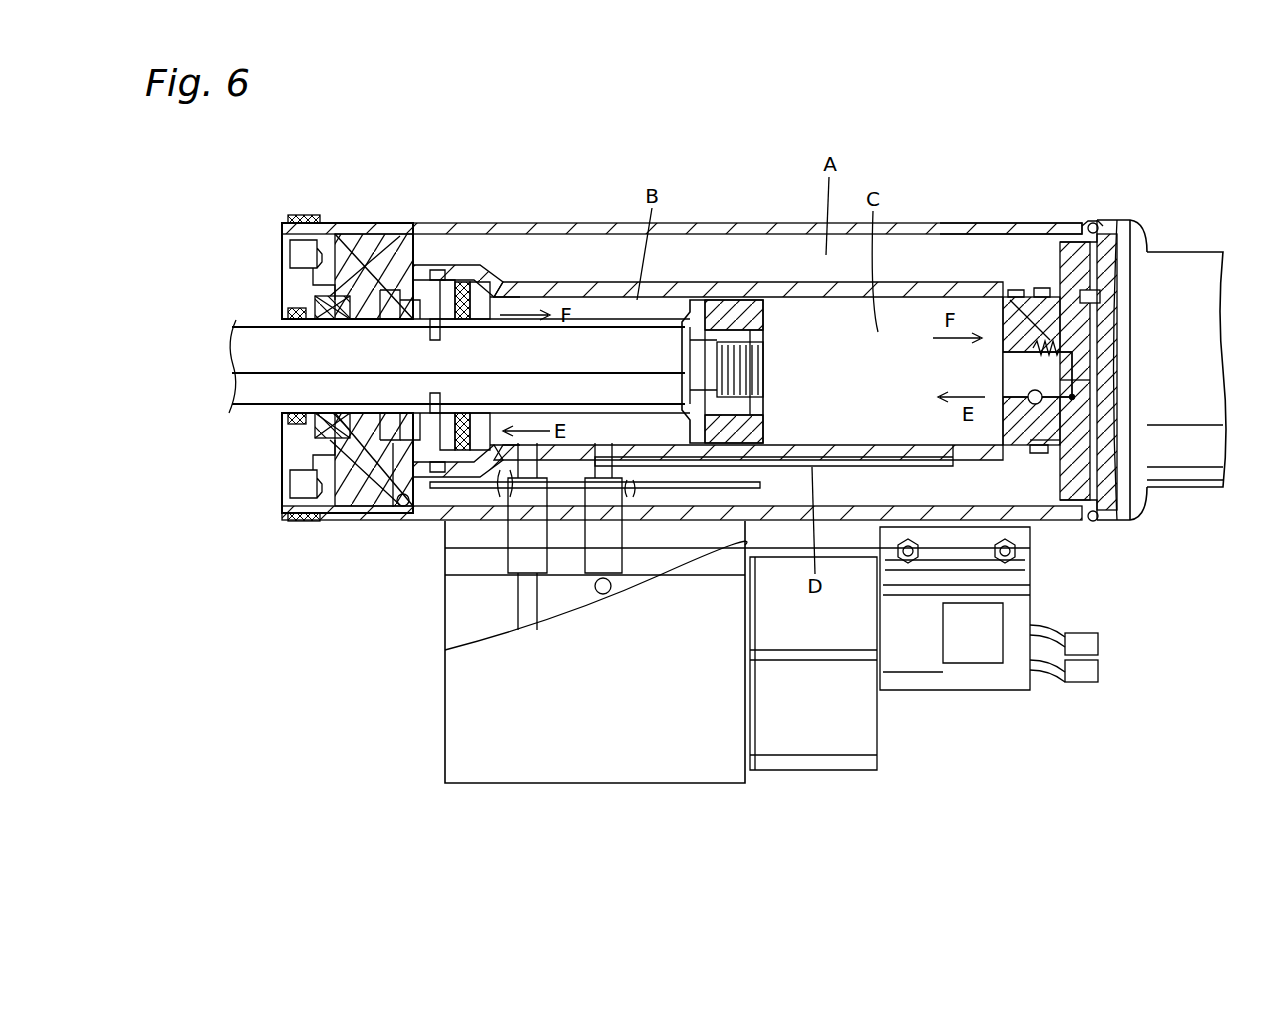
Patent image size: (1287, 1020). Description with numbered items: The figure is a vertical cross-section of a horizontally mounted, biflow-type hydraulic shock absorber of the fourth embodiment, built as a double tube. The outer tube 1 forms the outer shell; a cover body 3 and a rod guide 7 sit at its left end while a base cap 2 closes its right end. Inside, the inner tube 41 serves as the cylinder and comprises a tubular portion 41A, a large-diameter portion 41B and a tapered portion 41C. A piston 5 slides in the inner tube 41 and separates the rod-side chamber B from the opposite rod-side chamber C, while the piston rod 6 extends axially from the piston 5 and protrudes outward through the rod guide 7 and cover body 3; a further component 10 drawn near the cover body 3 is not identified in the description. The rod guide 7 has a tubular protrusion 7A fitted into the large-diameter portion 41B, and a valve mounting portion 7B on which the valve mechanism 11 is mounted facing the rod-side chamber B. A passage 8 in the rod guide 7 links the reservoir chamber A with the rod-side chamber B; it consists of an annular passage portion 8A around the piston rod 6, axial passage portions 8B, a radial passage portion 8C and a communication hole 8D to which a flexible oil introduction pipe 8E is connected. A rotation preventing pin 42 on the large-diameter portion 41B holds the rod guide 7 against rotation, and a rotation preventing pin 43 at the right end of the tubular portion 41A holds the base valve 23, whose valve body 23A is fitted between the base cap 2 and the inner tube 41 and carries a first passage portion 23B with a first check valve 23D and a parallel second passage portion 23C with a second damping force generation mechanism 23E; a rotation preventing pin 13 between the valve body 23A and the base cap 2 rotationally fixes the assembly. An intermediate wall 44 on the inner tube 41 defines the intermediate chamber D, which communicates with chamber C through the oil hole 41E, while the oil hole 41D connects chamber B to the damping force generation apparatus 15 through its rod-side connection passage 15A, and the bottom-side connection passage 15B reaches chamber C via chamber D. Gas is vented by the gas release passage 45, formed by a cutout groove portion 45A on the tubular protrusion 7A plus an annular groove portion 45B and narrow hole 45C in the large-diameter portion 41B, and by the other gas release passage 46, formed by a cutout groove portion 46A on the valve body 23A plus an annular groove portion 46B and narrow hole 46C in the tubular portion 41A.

The outer tube 1 is at (945, 228).
The base cap 2 is at (1147, 280).
The cover body 3 is at (290, 262).
The piston 5 is at (732, 305).
The piston rod 6 is at (253, 383).
The rod guide 7 is at (353, 273).
The tubular protrusion 7A is at (470, 520).
The valve mounting portion 7B is at (450, 288).
The passage 8 is at (325, 428).
The annular passage portion 8A is at (373, 297).
The axial passage portions 8B is at (393, 298).
The radial passage portion 8C is at (345, 500).
The communication hole 8D is at (397, 513).
The oil introduction pipe 8E is at (508, 542).
The dust seal 10 is at (300, 314).
The valve mechanism 11 is at (417, 307).
The rotation preventing pin 13 is at (1113, 320).
The damping force generation apparatus 15 is at (908, 752).
The rod-side connection passage 15A is at (445, 630).
The bottom-side connection passage 15B is at (637, 600).
The base valve 23 is at (1082, 500).
The valve body 23A is at (1080, 277).
The first passage portion 23B is at (1133, 487).
The second passage portion 23C is at (1077, 377).
The first check valve 23D is at (1040, 475).
The second damping force generation mechanism 23E is at (1094, 222).
The inner tube 41 is at (787, 270).
The tubular portion 41A is at (918, 290).
The large-diameter portion 41B is at (438, 287).
The tapered portion 41C is at (523, 300).
The oil hole 41D is at (500, 570).
The oil hole 41E is at (940, 452).
The rotation preventing pin 42 is at (467, 272).
The rotation preventing pin 43 is at (1018, 300).
The intermediate wall 44 is at (872, 475).
The gas release passage 45 is at (477, 273).
The cutout groove portion 45A is at (485, 283).
The annular groove portion 45B is at (450, 273).
The narrow hole 45C is at (445, 488).
The gas release passage 46 is at (1030, 320).
The cutout groove portion 46A is at (1010, 292).
The annular groove portion 46B is at (1045, 292).
The narrow hole 46C is at (1040, 405).